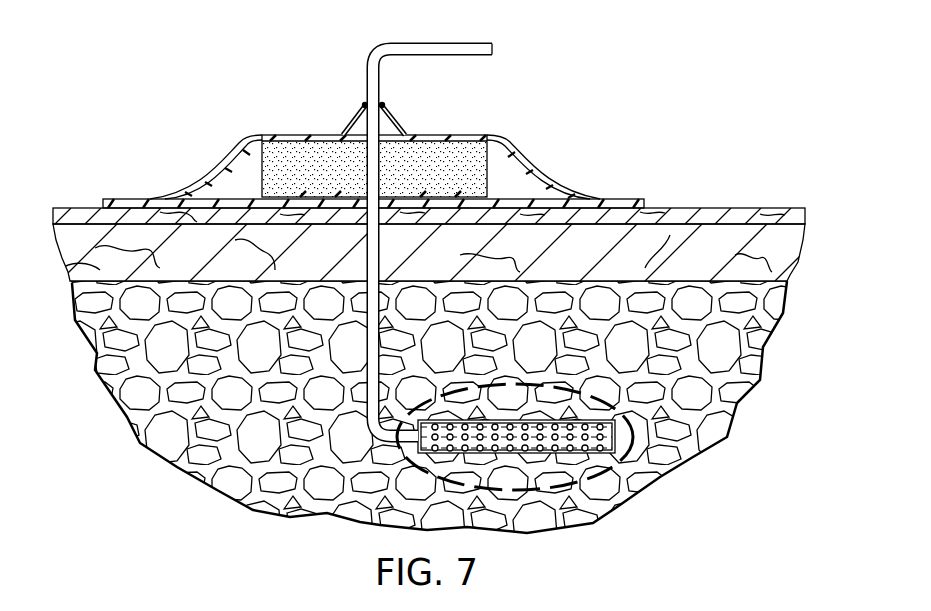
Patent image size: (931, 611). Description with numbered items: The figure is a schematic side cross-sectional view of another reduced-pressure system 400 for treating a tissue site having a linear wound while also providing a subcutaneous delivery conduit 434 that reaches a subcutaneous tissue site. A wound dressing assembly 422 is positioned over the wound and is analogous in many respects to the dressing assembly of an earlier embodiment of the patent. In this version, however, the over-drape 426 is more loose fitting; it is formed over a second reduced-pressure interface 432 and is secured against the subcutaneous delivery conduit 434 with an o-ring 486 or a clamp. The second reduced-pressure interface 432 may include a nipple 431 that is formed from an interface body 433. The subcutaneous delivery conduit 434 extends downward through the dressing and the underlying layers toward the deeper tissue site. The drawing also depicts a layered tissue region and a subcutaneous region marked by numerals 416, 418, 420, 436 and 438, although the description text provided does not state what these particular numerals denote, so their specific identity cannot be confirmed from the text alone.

The reduced-pressure system 400 is at (630, 73).
The cover plate 416 is at (80, 216).
The soil layer 418 is at (58, 273).
The gravel layer 420 is at (97, 372).
The wound dressing assembly 422 is at (373, 120).
The over-drape 426 is at (518, 160).
The nipple 431 is at (385, 116).
The second reduced-pressure interface 432 is at (397, 120).
The interface body 433 is at (351, 126).
The subcutaneous delivery conduit 434 is at (366, 63).
The emitter 436 is at (578, 456).
The dispersion zone 438 is at (630, 462).
The o-ring 486 is at (361, 104).